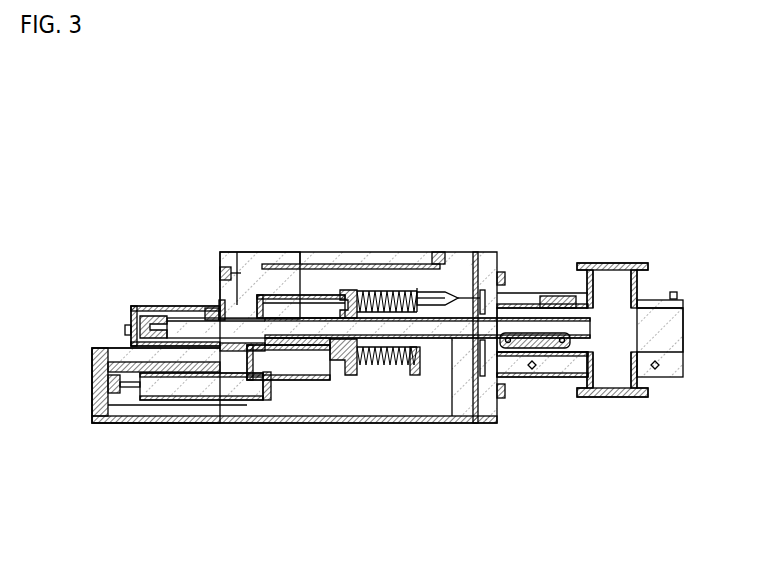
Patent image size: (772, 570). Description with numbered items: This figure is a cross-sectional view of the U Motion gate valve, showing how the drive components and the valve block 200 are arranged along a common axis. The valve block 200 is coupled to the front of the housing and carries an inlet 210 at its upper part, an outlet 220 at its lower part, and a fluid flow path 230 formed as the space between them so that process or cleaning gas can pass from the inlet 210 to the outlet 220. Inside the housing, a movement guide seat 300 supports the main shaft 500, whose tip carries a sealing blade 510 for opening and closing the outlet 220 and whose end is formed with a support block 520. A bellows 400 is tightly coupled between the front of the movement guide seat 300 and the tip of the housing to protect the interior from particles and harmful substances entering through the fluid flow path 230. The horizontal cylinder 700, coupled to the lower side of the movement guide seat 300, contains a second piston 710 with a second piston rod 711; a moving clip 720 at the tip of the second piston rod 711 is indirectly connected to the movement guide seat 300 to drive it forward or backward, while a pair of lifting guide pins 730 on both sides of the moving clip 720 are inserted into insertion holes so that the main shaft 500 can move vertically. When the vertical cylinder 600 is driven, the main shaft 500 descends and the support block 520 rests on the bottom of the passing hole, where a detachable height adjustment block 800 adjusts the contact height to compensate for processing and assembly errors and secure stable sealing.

The valve block 200 is at (666, 348).
The inlet 210 is at (612, 280).
The outlet 220 is at (612, 383).
The fluid flow path 230 is at (613, 332).
The movement guide seat 300 is at (278, 318).
The bellows 400 is at (440, 280).
The main shaft 500 is at (310, 275).
The sealing blade 510 is at (530, 330).
The support block 520 is at (147, 306).
The vertical cylinder 600 is at (418, 266).
The horizontal cylinder 700 is at (115, 355).
The second piston 710 is at (133, 390).
The second piston rod 711 is at (193, 387).
The moving clip 720 is at (283, 380).
The lifting guide pins 730 is at (262, 335).
The height adjustment block 800 is at (205, 307).